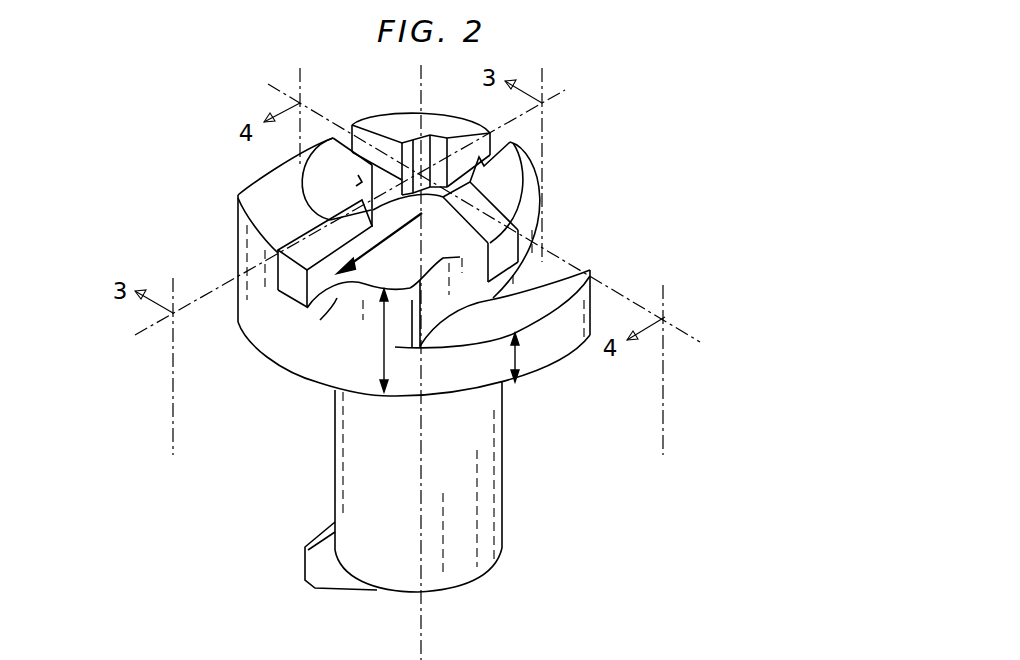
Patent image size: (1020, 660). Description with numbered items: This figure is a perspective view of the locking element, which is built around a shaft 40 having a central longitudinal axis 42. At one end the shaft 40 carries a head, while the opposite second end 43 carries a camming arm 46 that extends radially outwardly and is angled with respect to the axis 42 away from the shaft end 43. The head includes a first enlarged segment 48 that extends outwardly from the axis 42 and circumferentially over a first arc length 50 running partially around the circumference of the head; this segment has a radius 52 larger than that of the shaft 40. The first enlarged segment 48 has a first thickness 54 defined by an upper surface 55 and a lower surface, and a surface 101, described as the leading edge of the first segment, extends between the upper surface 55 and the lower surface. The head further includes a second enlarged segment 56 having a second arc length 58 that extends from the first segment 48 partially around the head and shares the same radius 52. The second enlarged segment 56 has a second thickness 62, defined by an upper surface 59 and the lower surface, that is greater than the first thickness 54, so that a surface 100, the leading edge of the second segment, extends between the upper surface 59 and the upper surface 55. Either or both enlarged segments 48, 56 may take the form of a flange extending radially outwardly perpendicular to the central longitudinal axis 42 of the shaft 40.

The shaft 40 is at (465, 447).
The central longitudinal axis 42 is at (417, 627).
The second end 43 is at (486, 570).
The camming arm 46 is at (320, 569).
The first enlarged segment 48 is at (550, 348).
The first arc length 50 is at (523, 383).
The radius 52 is at (276, 237).
The first thickness 54 is at (518, 352).
The upper surface 55 is at (558, 282).
The second enlarged segment 56 is at (337, 300).
The second arc length 58 is at (358, 288).
The upper surface 59 is at (268, 203).
The second thickness 62 is at (372, 378).
The surface 100 is at (430, 300).
The surface 101 is at (552, 262).